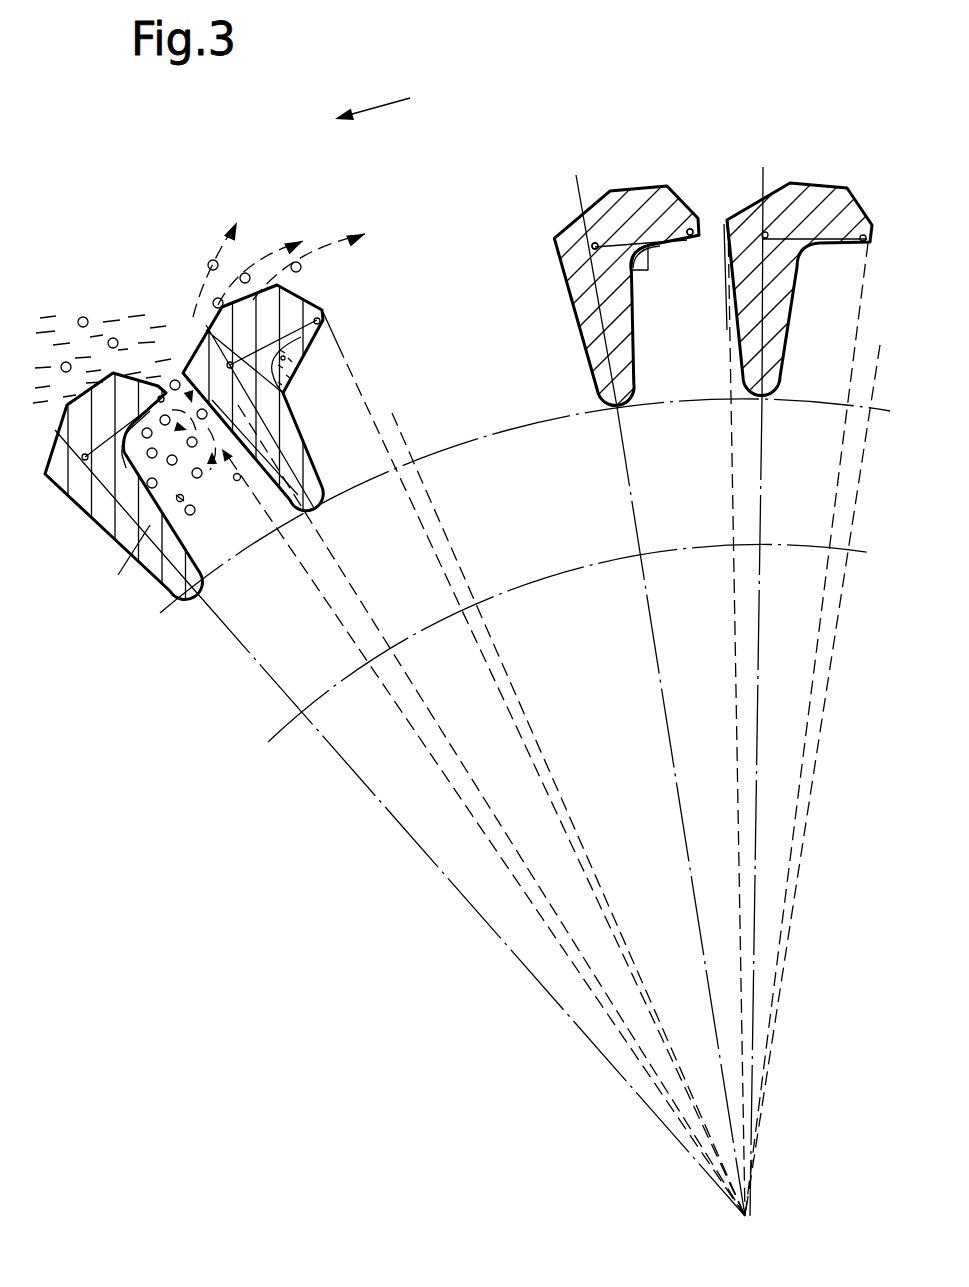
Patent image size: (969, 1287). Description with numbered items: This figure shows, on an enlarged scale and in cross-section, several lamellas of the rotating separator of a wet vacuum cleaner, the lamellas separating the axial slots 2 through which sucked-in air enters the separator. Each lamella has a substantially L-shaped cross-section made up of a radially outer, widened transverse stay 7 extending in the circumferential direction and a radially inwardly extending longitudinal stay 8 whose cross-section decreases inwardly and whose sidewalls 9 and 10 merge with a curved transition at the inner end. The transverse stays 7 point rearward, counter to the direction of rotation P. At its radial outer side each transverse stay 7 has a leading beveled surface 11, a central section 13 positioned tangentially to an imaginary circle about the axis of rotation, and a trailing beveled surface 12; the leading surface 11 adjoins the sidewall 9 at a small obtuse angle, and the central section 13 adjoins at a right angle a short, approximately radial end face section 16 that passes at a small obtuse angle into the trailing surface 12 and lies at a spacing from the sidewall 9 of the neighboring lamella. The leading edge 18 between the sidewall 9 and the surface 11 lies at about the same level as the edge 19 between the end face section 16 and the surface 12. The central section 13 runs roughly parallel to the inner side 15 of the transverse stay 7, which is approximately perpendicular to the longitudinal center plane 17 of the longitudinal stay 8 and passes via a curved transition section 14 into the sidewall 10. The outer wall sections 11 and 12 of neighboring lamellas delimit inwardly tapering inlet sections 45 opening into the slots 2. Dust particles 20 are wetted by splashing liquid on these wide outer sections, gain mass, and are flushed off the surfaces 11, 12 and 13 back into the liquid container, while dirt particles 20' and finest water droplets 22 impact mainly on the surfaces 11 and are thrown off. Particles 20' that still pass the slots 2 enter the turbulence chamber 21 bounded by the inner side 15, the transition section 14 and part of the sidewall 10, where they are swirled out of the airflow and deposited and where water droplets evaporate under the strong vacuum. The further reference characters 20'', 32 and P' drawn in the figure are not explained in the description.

The axial slots 2 is at (718, 200).
The transverse stay 7 is at (622, 202).
The longitudinal stay 8 is at (578, 305).
The sidewall 9 is at (581, 337).
The sidewall 10 is at (701, 227).
The leading beveled surface 11 is at (593, 243).
The trailing beveled surface 12 is at (672, 228).
The central section 13 is at (653, 187).
The curved transition section 14 is at (577, 287).
The inner side 15 is at (672, 243).
The end face section 16 is at (697, 235).
The longitudinal center plane 17 is at (573, 135).
The leading edge 18 is at (553, 234).
The edge 19 is at (323, 310).
The dust particles 20 is at (104, 317).
The dirt particles 20' is at (338, 366).
The material particles 20'' is at (176, 497).
The turbulence chamber 21 is at (282, 356).
The finest water droplets 22 is at (239, 481).
The chamfer 32 is at (668, 186).
The inlet sections 45 is at (712, 225).
The direction of rotation P is at (381, 96).
The direction of movement P' is at (128, 567).